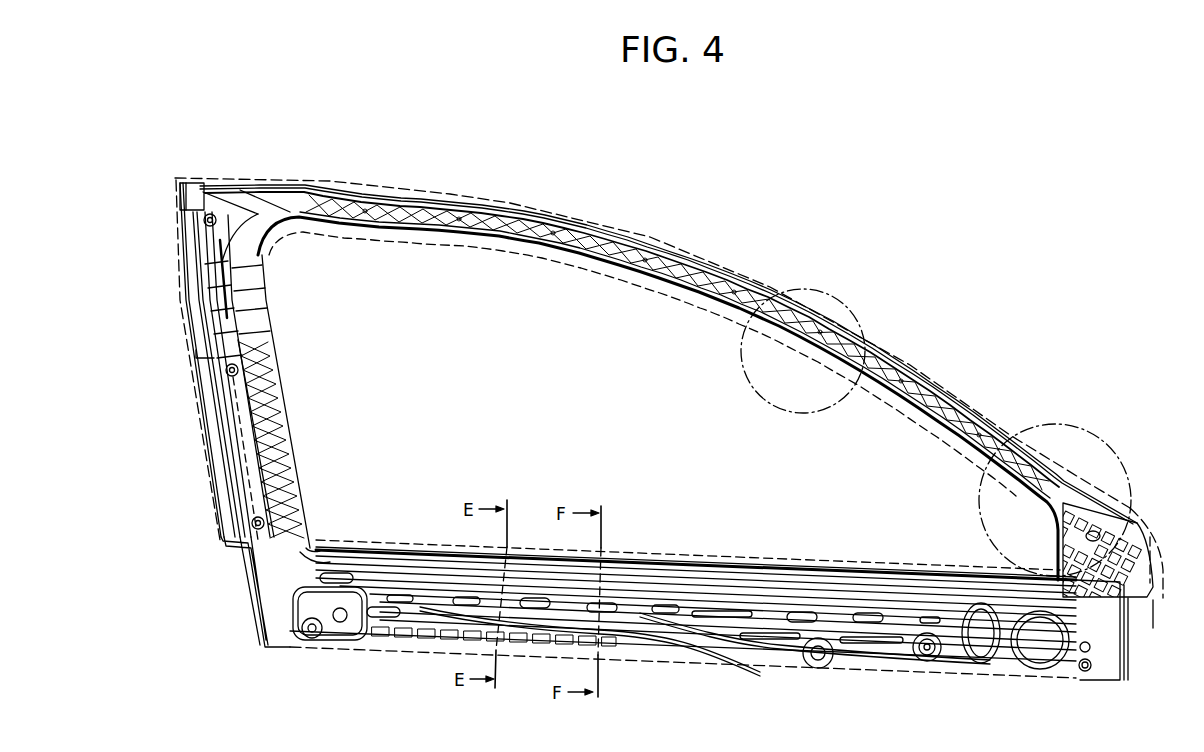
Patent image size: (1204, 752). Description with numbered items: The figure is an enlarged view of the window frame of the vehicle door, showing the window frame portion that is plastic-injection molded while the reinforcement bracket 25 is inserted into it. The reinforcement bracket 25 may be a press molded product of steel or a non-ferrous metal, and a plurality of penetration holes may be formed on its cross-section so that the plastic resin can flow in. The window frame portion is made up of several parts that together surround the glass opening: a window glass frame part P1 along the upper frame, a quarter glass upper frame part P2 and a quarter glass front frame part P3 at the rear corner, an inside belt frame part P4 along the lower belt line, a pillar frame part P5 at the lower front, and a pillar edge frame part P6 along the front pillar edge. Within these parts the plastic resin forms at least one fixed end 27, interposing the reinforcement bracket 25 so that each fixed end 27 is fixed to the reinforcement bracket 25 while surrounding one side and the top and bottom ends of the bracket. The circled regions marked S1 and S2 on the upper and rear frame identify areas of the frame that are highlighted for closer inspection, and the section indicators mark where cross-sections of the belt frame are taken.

The reinforcement bracket 25 is at (665, 251).
The fixed end 27 is at (455, 604).
The window glass frame part P1 is at (383, 184).
The quarter glass upper frame part P2 is at (998, 423).
The quarter glass front frame part P3 is at (1153, 606).
The inside belt frame part P4 is at (697, 553).
The pillar frame part P5 is at (265, 578).
The pillar edge frame part P6 is at (196, 324).
The first section region S1 is at (850, 302).
The second section region S2 is at (980, 513).